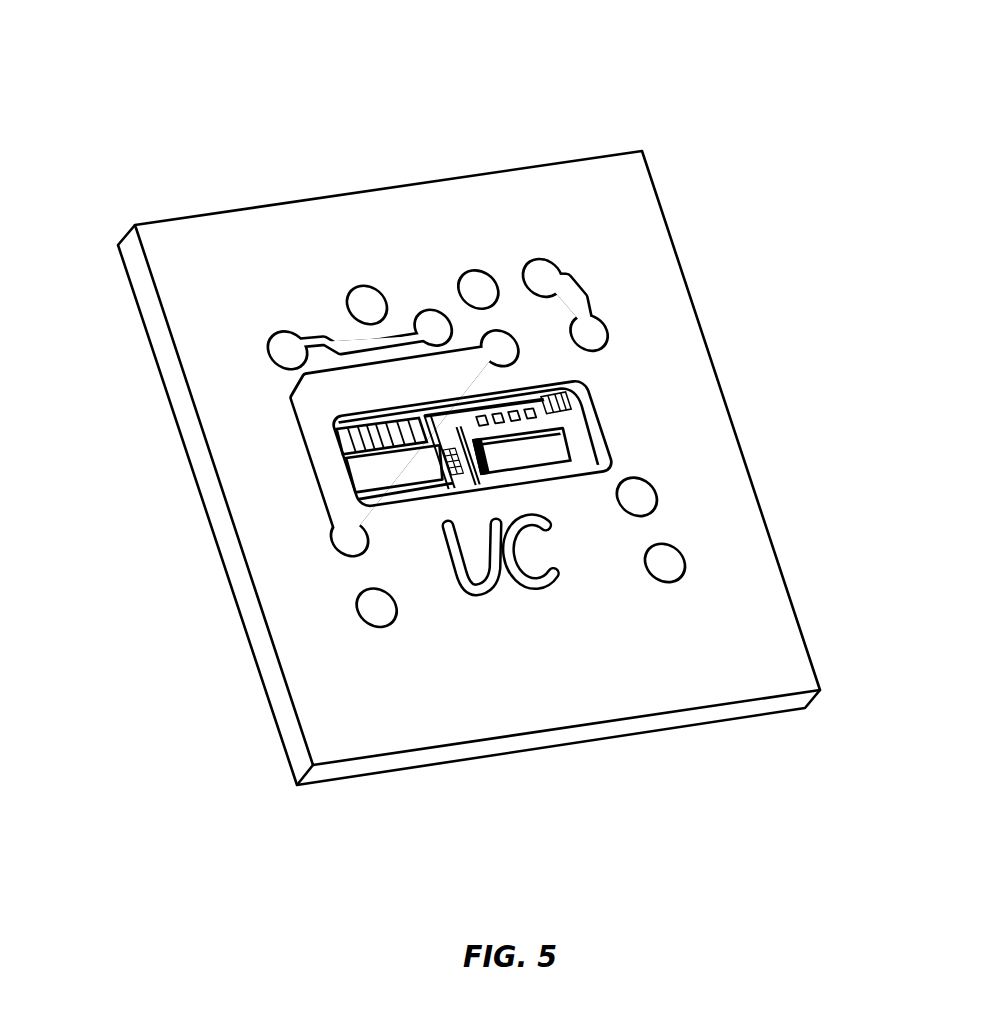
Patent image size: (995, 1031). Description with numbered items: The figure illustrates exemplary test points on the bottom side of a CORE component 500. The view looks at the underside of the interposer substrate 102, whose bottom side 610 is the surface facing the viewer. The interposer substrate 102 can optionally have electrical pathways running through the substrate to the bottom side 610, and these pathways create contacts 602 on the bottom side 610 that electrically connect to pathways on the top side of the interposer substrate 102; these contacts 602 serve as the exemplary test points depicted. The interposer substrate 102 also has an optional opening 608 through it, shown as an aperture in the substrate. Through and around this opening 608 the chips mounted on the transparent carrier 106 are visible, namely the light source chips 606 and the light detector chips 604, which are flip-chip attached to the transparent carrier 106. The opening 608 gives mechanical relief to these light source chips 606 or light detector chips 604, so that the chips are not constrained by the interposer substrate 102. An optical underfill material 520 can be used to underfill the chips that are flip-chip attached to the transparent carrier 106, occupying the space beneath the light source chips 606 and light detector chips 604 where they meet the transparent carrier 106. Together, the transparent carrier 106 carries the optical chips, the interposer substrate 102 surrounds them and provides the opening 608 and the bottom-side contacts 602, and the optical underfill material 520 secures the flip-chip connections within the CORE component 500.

The CORE component 500 is at (459, 405).
The interposer substrate 102 is at (238, 573).
The transparent carrier 106 is at (584, 406).
The optical underfill material 520 is at (366, 468).
The contacts 602 is at (671, 561).
The light detector chips 604 is at (566, 440).
The light source chips 606 is at (370, 491).
The opening 608 is at (515, 395).
The bottom side 610 is at (591, 235).